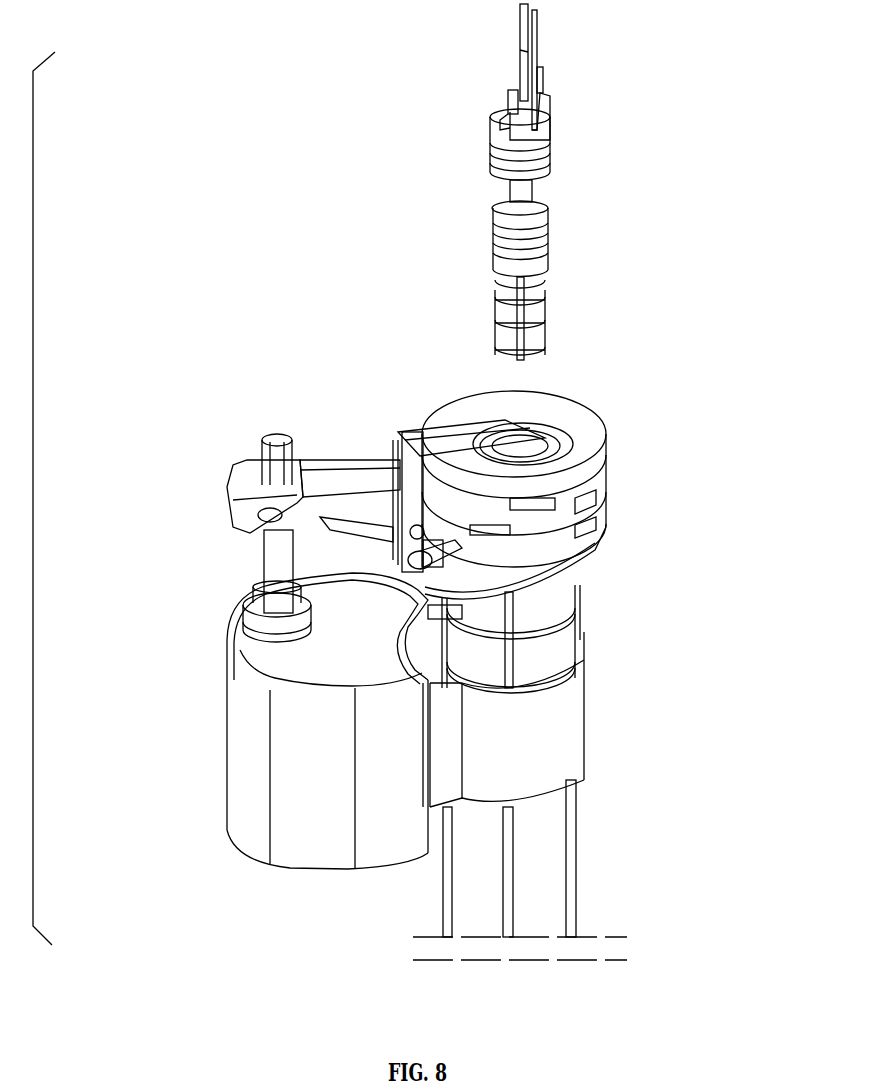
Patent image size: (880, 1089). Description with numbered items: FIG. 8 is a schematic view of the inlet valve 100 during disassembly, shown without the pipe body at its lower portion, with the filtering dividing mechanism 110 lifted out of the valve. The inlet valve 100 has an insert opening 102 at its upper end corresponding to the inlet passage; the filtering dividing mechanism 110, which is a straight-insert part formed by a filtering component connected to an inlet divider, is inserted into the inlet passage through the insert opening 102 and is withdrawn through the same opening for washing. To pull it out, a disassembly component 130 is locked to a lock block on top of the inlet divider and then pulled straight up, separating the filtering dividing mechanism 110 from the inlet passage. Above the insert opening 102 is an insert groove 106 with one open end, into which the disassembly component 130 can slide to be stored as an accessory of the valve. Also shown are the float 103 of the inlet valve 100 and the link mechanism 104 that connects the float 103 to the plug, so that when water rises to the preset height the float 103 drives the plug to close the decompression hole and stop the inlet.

The inlet valve 100 is at (573, 535).
The insert opening 102 is at (518, 455).
The float 103 is at (250, 760).
The link mechanism 104 is at (275, 550).
The insert groove 106 is at (472, 440).
The filtering dividing mechanism 110 is at (493, 215).
The disassembly component 130 is at (523, 50).